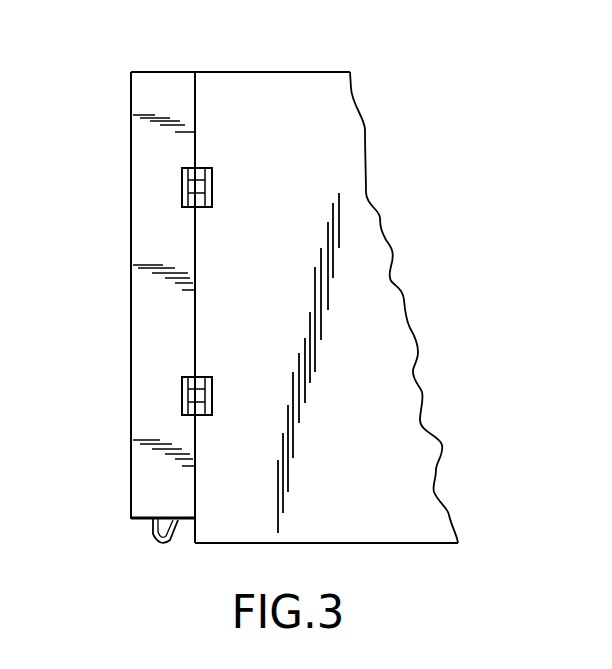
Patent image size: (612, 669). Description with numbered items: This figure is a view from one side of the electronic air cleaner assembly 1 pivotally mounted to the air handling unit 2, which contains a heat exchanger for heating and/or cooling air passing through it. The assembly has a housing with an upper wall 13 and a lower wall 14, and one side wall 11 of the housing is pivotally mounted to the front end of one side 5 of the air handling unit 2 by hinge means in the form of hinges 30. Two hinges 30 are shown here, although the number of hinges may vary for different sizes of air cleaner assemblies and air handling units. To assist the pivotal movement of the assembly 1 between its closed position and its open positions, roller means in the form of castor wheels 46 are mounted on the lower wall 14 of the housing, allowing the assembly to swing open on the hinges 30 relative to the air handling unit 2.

The electronic air cleaner assembly 1 is at (131, 72).
The air handling unit 2 is at (270, 72).
The side of the air handling unit 5 is at (279, 276).
The first side wall 11 is at (150, 110).
The upper wall 13 is at (178, 72).
The lower wall 14 is at (138, 521).
The hinges 30 is at (182, 186).
The castor wheels 46 is at (153, 540).